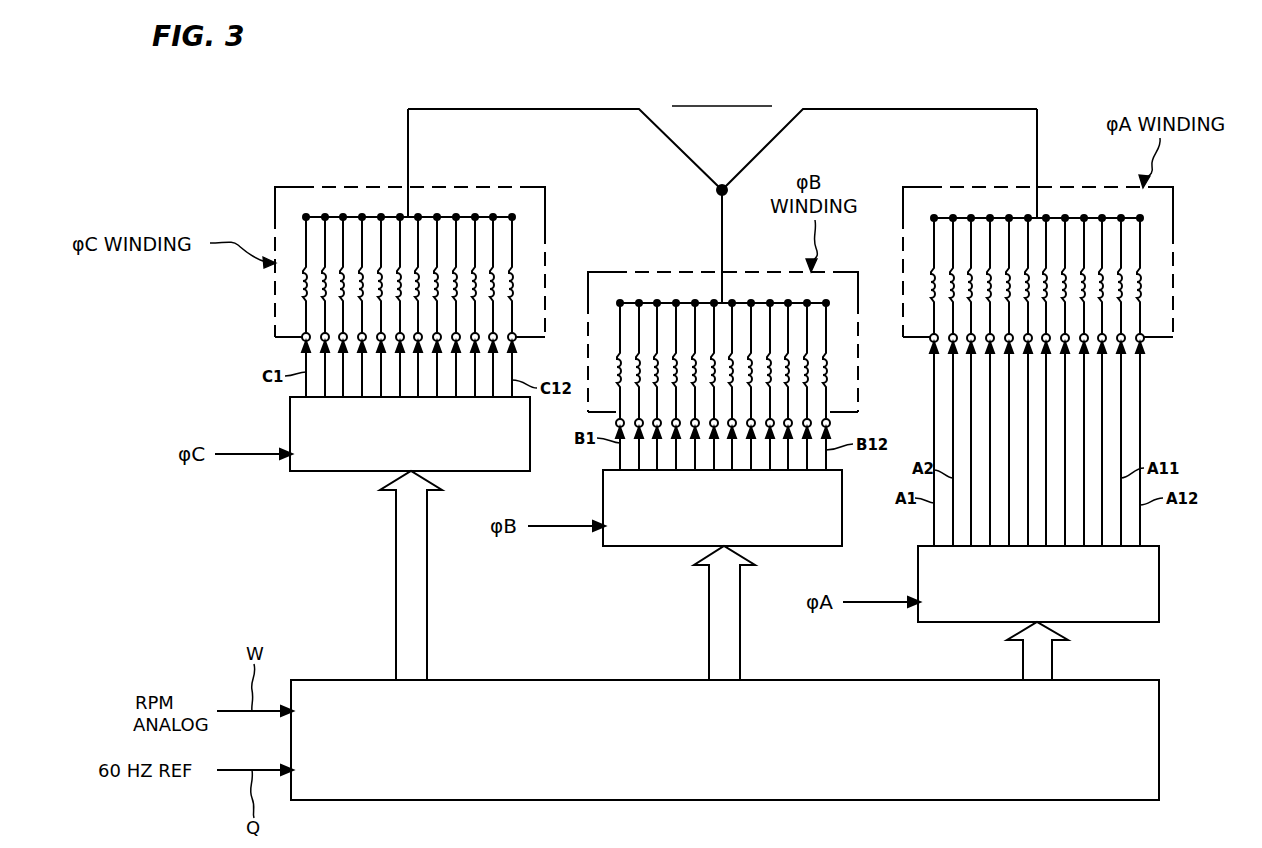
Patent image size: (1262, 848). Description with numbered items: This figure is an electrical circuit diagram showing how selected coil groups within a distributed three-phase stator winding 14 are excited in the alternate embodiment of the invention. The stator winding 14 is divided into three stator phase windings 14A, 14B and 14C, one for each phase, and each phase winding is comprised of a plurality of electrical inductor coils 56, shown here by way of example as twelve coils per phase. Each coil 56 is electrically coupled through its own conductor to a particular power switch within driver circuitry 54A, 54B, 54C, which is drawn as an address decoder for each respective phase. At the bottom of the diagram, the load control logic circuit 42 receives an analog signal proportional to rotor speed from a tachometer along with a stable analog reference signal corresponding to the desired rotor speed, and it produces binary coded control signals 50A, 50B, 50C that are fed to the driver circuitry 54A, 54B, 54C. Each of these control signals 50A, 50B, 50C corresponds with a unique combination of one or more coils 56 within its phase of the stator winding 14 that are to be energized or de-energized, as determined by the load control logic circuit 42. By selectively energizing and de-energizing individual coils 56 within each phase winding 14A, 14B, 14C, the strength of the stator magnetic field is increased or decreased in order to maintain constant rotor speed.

The stator winding 14 is at (908, 82).
The stator phase winding 14A is at (937, 187).
The stator phase winding 14B is at (620, 272).
The stator phase winding 14C is at (492, 187).
The electrical inductor coil 56 is at (300, 287).
The driver circuitry 54A is at (1159, 583).
The driver circuitry 54B is at (644, 546).
The driver circuitry 54C is at (336, 471).
The binary coded control signal 50A is at (1052, 648).
The binary coded control signal 50B is at (740, 632).
The binary coded control signal 50C is at (427, 618).
The load control logic circuit 42 is at (1159, 745).